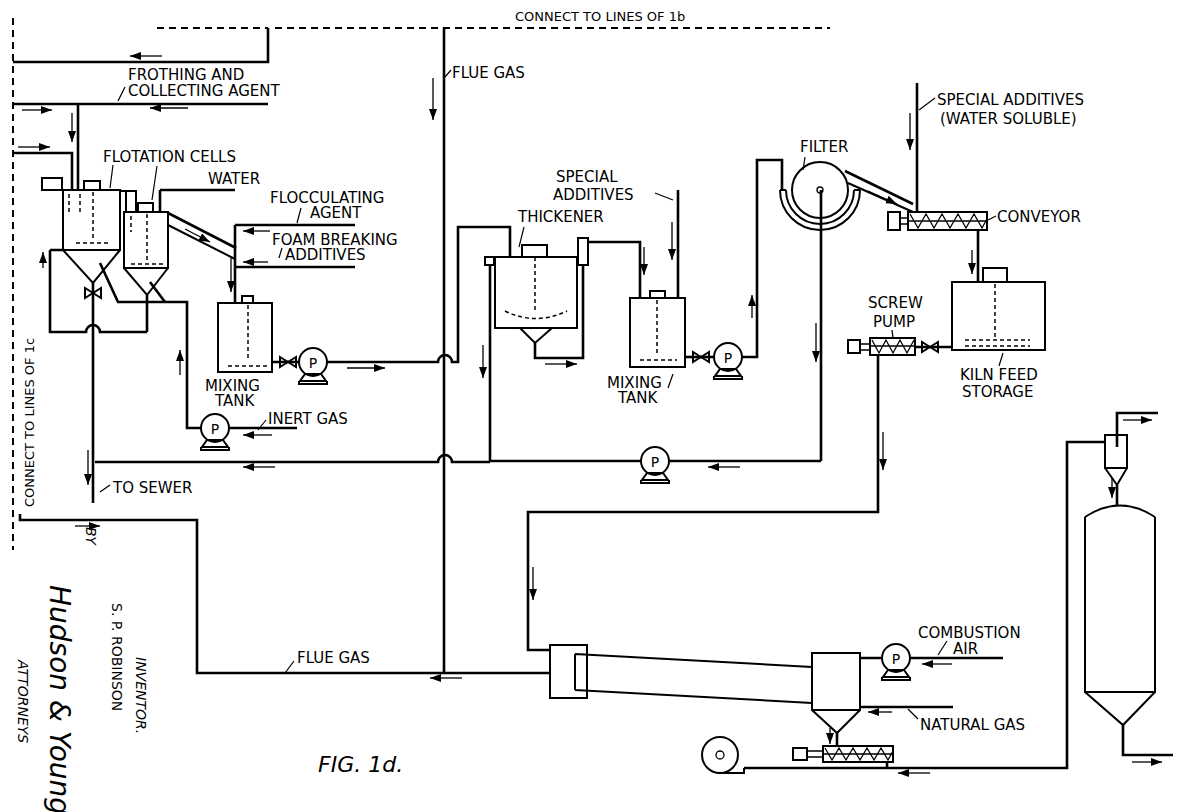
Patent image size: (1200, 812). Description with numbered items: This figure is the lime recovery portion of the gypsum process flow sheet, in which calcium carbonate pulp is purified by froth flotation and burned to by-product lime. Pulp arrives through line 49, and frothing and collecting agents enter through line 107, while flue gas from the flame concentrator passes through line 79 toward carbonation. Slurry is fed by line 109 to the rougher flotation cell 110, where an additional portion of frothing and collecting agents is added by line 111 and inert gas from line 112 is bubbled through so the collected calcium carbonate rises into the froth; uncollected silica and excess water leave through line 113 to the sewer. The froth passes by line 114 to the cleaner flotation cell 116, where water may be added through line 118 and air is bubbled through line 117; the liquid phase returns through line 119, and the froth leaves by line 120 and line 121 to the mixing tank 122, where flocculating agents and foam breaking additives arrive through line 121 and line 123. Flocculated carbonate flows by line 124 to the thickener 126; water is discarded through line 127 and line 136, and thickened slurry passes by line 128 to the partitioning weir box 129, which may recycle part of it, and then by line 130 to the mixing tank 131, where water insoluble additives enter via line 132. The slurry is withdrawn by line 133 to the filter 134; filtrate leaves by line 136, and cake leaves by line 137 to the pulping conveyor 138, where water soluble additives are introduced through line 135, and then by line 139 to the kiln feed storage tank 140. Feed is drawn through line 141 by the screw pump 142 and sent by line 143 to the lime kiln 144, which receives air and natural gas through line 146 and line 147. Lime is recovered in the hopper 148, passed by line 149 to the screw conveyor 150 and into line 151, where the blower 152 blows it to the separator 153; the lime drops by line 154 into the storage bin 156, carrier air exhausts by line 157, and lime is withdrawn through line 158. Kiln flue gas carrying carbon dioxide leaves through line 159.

The line 49 is at (82, 63).
The line 79 is at (445, 112).
The line 107 is at (29, 106).
The line 109 is at (52, 154).
The flotation cell 110 is at (83, 263).
The line 111 is at (79, 126).
The line 112 is at (135, 303).
The line 113 is at (92, 398).
The line 114 is at (126, 190).
The second flotation cell 116 is at (169, 258).
The line 117 is at (160, 298).
The line 118 is at (162, 193).
The line 119 is at (68, 333).
The line 120 is at (190, 227).
The line 121 is at (236, 288).
The mixing tank 122 is at (273, 313).
The line 123 is at (296, 268).
The line 124 is at (345, 362).
The thickener 126 is at (520, 330).
The line 127 is at (491, 411).
The line 128 is at (585, 342).
The partitioning weir box 129 is at (589, 241).
The line 130 is at (639, 279).
The mixing tank 131 is at (686, 311).
The line 132 is at (679, 216).
The line 133 is at (756, 280).
The filter 134 is at (806, 222).
The line 135 is at (919, 172).
The line 136 is at (822, 282).
The line 137 is at (860, 187).
The pulping conveyor 138 is at (946, 231).
The line 139 is at (979, 248).
The kiln feed storage tank 140 is at (1046, 302).
The line 141 is at (943, 352).
The screw pump 142 is at (881, 357).
The line 143 is at (798, 513).
The lime kiln 144 is at (700, 663).
The line 146 is at (961, 661).
The line 147 is at (925, 707).
The hopper 148 is at (839, 652).
The line 149 is at (842, 740).
The screw conveyor 150 is at (893, 748).
The line 151 is at (981, 767).
The blower 152 is at (702, 755).
The separator 153 is at (1128, 451).
The line 154 is at (1120, 494).
The storage bin 156 is at (1156, 633).
The line 157 is at (1118, 413).
The line 158 is at (1131, 756).
The line 159 is at (198, 641).